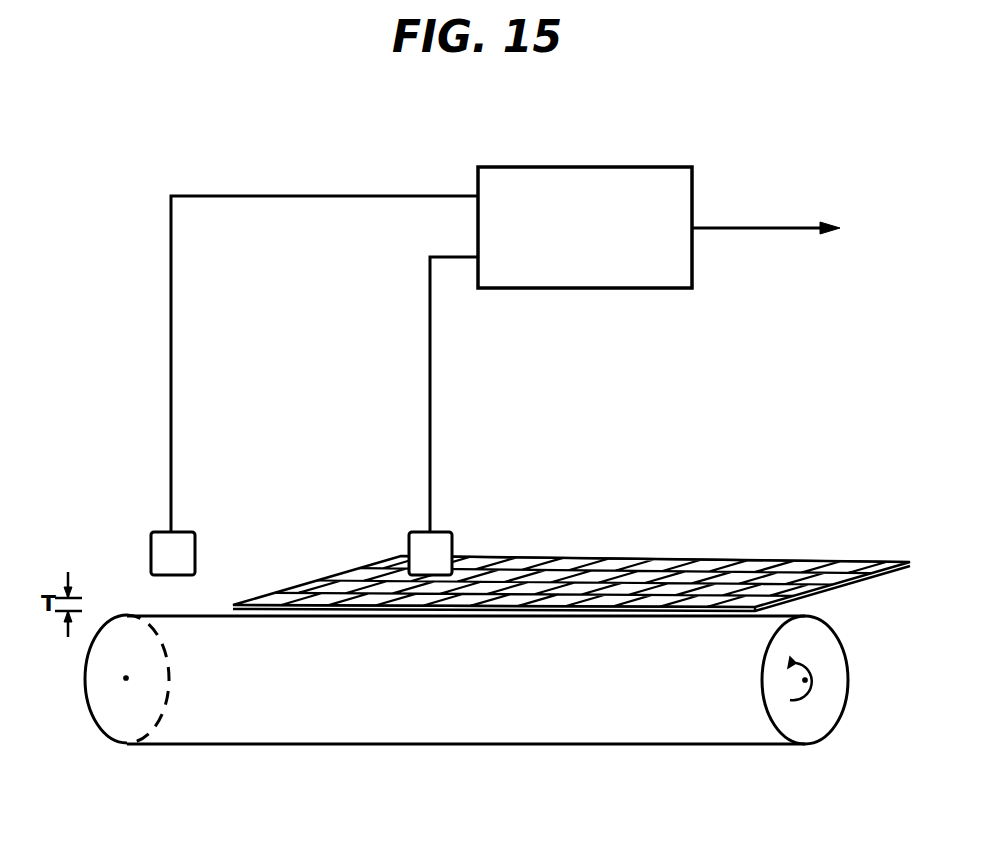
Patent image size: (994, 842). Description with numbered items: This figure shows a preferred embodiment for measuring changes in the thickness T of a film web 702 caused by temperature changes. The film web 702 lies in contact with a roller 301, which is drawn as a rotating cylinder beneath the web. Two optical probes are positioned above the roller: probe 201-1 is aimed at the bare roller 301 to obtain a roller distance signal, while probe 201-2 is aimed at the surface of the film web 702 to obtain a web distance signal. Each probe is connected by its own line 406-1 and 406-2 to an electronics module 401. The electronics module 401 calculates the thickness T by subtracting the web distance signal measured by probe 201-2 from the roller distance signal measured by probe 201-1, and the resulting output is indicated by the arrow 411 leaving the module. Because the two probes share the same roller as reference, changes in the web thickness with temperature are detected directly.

The roller 301 is at (835, 726).
The film web 702 is at (686, 563).
The optical probe 201-1 is at (195, 548).
The optical probe 201-2 is at (452, 548).
The first sensor cable 406-1 is at (171, 410).
The second sensor cable 406-2 is at (430, 437).
The electronics module 401 is at (692, 192).
The output signal 411 is at (752, 230).